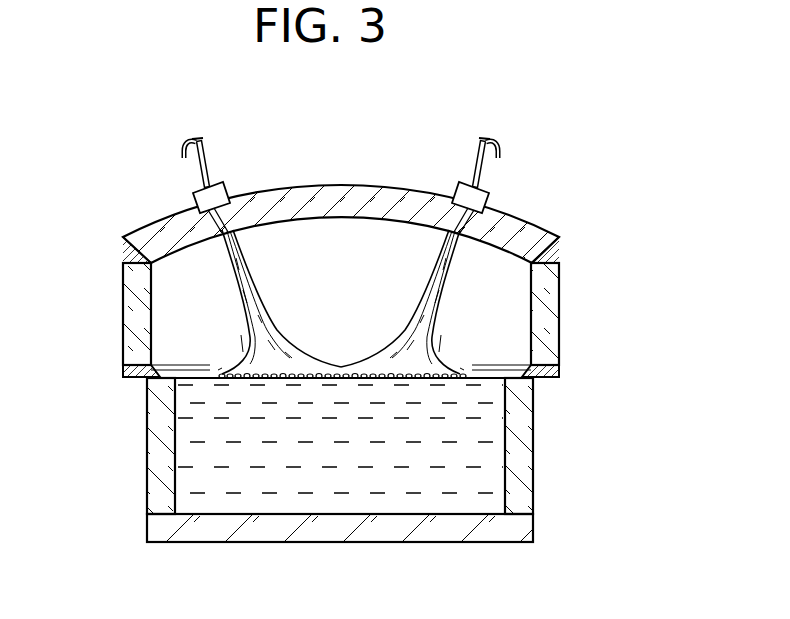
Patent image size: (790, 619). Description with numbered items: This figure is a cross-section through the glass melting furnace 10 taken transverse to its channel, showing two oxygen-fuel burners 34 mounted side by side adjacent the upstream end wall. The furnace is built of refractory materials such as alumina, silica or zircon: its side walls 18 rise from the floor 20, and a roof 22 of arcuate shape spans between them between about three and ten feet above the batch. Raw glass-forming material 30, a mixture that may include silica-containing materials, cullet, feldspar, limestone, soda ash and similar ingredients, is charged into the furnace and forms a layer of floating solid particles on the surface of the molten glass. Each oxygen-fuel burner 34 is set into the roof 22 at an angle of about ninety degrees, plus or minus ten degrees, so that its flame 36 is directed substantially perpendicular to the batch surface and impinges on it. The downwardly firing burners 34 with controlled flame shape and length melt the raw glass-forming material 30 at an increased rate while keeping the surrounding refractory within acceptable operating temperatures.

The glass melting furnace 10 is at (358, 355).
The side walls 18 is at (123, 312).
The floor 20 is at (405, 542).
The roof 22 is at (345, 186).
The raw glass-forming material 30 is at (432, 375).
The oxygen-fuel burner 34 is at (197, 170).
The flame 36 is at (422, 298).